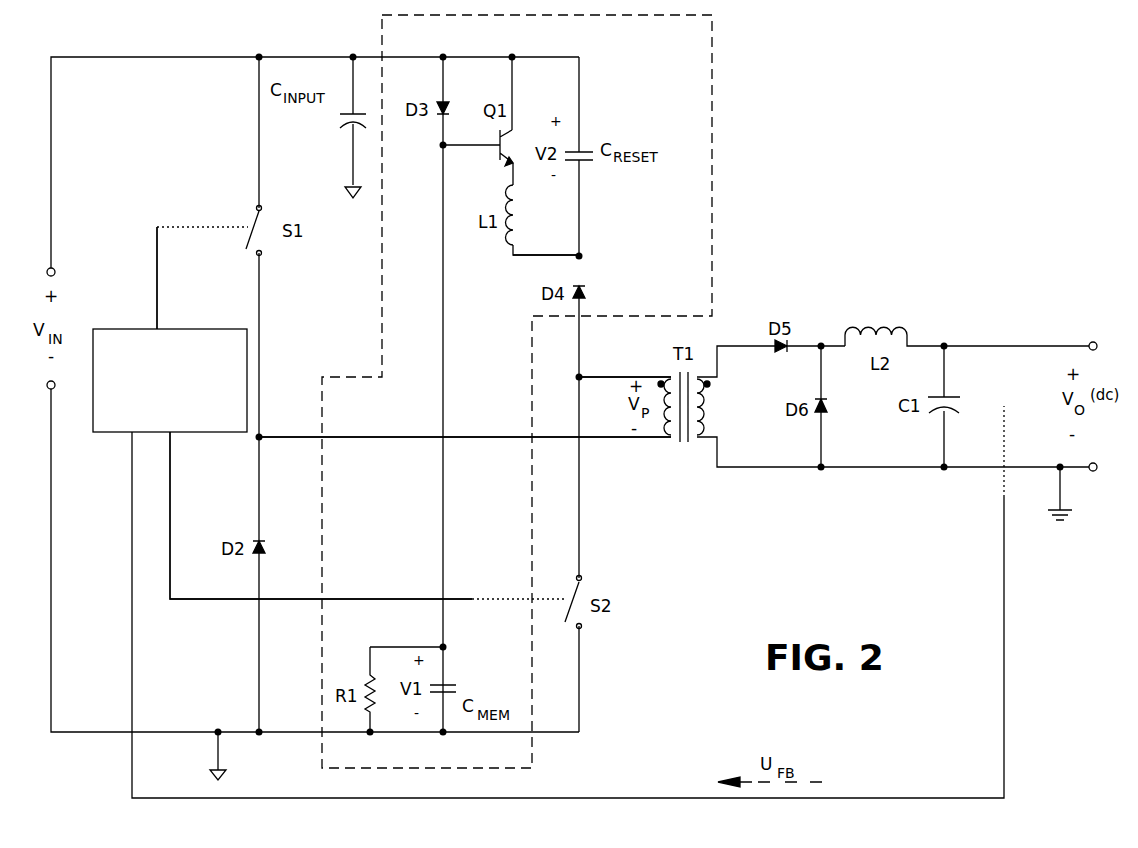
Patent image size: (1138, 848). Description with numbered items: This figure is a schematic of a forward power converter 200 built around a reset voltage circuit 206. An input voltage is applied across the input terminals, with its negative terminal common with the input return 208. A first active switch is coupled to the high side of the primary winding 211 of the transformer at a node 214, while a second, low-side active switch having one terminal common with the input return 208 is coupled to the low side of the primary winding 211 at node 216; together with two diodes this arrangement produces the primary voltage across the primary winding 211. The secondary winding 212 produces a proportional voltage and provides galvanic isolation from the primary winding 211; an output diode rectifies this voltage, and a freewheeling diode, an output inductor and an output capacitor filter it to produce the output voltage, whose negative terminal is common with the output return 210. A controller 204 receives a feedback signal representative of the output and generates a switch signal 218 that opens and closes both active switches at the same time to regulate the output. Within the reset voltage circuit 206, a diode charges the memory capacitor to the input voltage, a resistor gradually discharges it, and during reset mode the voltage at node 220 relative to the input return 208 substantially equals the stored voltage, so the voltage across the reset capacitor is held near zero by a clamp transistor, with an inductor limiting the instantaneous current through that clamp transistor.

The forward power converter 200 is at (1037, 76).
The controller 204 is at (154, 401).
The reset voltage circuit 206 is at (730, 192).
The input return 208 is at (232, 763).
The output return 210 is at (1060, 526).
The primary winding 211 is at (665, 447).
The secondary winding 212 is at (699, 447).
The node 214 is at (272, 427).
The node 216 is at (585, 372).
The switch signal 218 is at (168, 292).
The node 220 is at (590, 258).